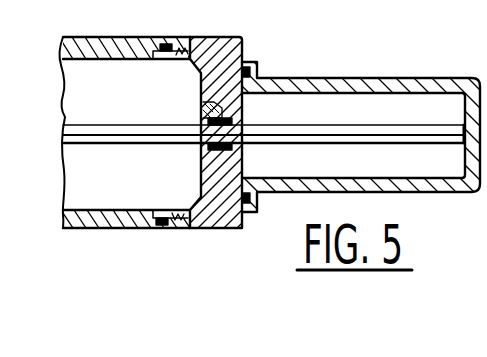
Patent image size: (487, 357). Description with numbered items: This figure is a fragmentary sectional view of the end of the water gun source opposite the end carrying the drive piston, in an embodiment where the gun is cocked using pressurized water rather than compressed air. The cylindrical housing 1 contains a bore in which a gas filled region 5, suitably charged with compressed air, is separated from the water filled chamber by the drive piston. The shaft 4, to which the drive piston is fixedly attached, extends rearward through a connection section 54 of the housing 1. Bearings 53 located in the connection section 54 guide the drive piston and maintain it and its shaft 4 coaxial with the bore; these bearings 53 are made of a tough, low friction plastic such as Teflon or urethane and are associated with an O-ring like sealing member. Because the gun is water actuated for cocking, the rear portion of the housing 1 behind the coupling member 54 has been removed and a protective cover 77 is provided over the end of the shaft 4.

The cylindrical housing 1 is at (90, 45).
The shaft 4 is at (293, 123).
The gas filled region 5 is at (128, 93).
The bearings 53 is at (205, 102).
The connection section 54 is at (232, 38).
The protective cover 77 is at (383, 78).